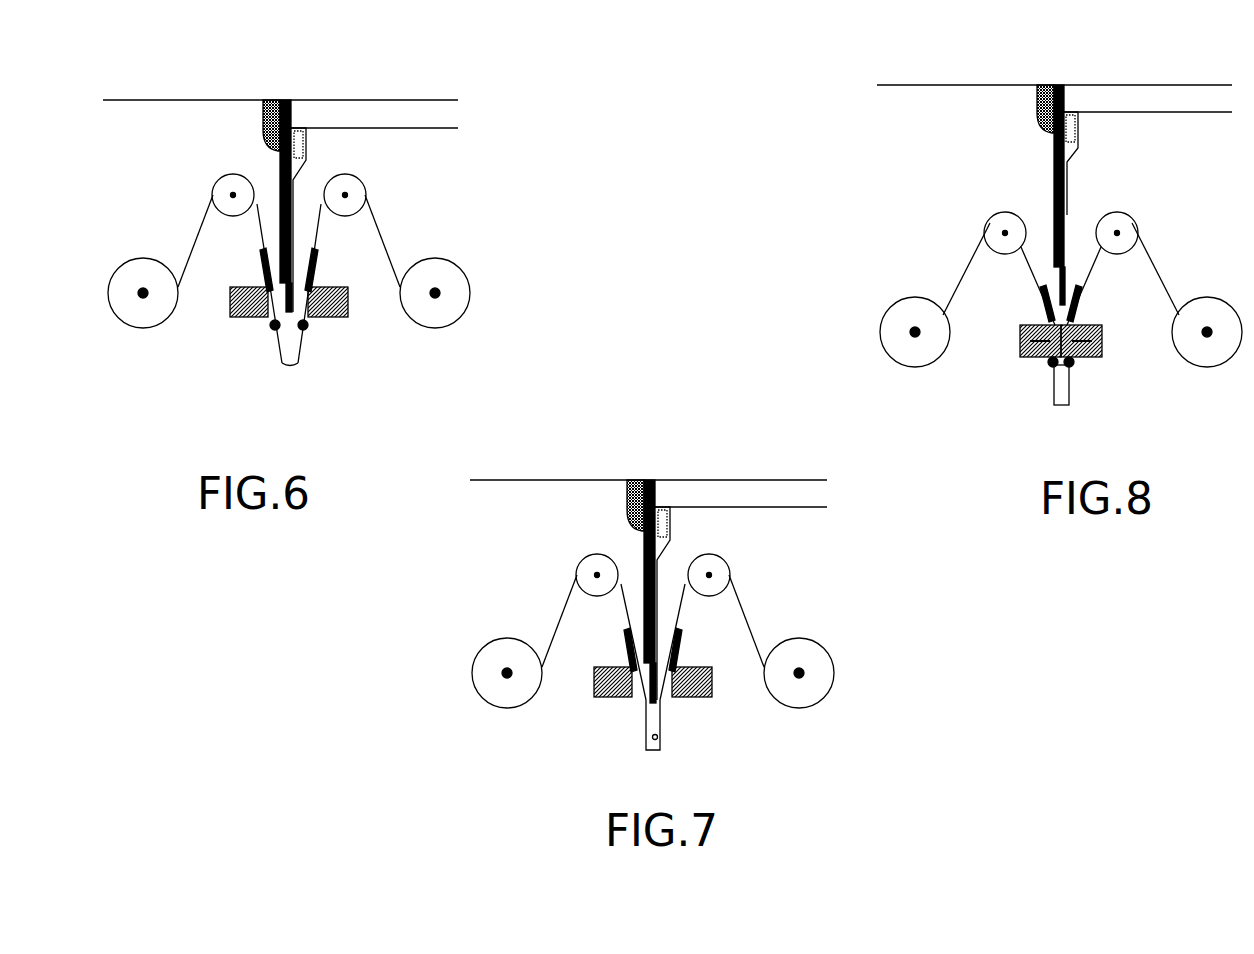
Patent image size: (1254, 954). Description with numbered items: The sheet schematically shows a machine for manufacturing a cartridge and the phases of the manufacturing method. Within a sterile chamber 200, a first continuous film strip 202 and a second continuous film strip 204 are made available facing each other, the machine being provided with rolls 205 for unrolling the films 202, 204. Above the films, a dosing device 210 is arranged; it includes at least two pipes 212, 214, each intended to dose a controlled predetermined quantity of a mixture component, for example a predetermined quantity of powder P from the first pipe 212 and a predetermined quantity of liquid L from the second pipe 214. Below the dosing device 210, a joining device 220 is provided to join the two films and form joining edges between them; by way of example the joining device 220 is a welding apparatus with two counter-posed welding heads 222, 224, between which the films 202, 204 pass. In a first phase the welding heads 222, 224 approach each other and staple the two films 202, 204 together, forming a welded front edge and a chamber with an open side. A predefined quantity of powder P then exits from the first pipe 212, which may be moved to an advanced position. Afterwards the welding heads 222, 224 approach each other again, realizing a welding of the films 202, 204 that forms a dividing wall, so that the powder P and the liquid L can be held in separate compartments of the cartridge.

In FIG. 6, the sterile chamber 200 is at (476, 216).
In FIG. 6, the first continuous film strip 202 is at (297, 352).
In FIG. 6, the second continuous film strip 204 is at (283, 345).
In FIG. 6, the rolls 205 is at (212, 192).
In FIG. 7, the rolls 205 is at (472, 661).
In FIG. 6, the dosing device 210 is at (210, 131).
In FIG. 7, the dosing device 210 is at (592, 511).
In FIG. 8, the dosing device 210 is at (998, 103).
In FIG. 7, the first pipe 212 is at (663, 578).
In FIG. 8, the first pipe 212 is at (1068, 181).
In FIG. 8, the second pipe 214 is at (1052, 216).
In FIG. 8, the joining device 220 is at (992, 346).
In FIG. 6, the welding head 222 is at (350, 308).
In FIG. 7, the welding head 222 is at (690, 662).
In FIG. 8, the welding head 222 is at (1100, 352).
In FIG. 6, the welding head 224 is at (232, 318).
In FIG. 7, the welding head 224 is at (615, 662).
In FIG. 8, the welding head 224 is at (1033, 360).
In FIG. 6, the liquid L is at (272, 100).
In FIG. 7, the liquid L is at (646, 480).
In FIG. 8, the liquid L is at (1040, 85).
In FIG. 6, the powder P is at (304, 138).
In FIG. 7, the powder P is at (665, 512).
In FIG. 8, the powder P is at (1069, 110).